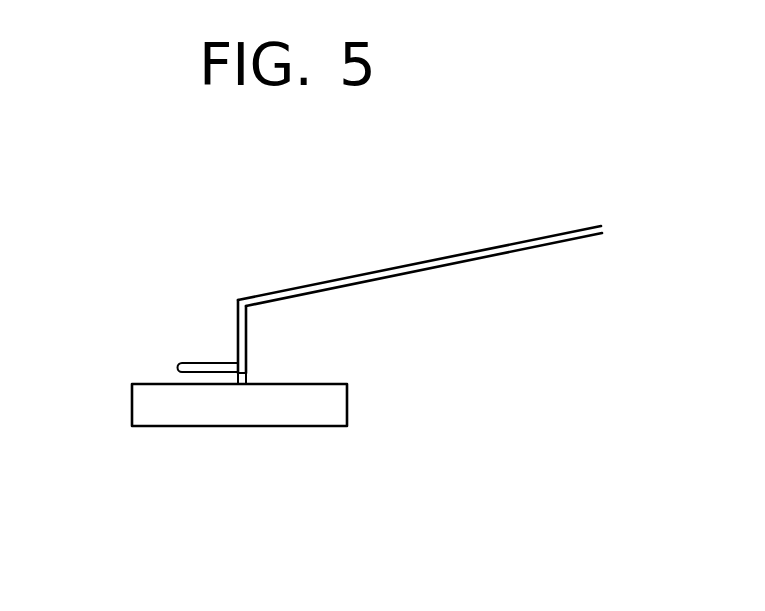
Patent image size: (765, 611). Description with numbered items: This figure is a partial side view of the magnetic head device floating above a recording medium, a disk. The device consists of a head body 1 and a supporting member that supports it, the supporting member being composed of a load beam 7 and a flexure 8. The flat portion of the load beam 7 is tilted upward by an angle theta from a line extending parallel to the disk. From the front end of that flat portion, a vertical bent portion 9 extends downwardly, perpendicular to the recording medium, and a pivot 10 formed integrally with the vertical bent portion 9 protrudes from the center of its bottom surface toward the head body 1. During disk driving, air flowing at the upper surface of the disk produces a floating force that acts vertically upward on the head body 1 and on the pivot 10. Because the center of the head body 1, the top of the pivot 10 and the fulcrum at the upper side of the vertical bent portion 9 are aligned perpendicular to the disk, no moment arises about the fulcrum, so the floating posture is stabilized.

The head body 1 is at (272, 346).
The load beam 7 is at (458, 246).
The flexure 8 is at (149, 384).
The vertical bent portion 9 is at (238, 333).
The pivot 10 is at (248, 378).